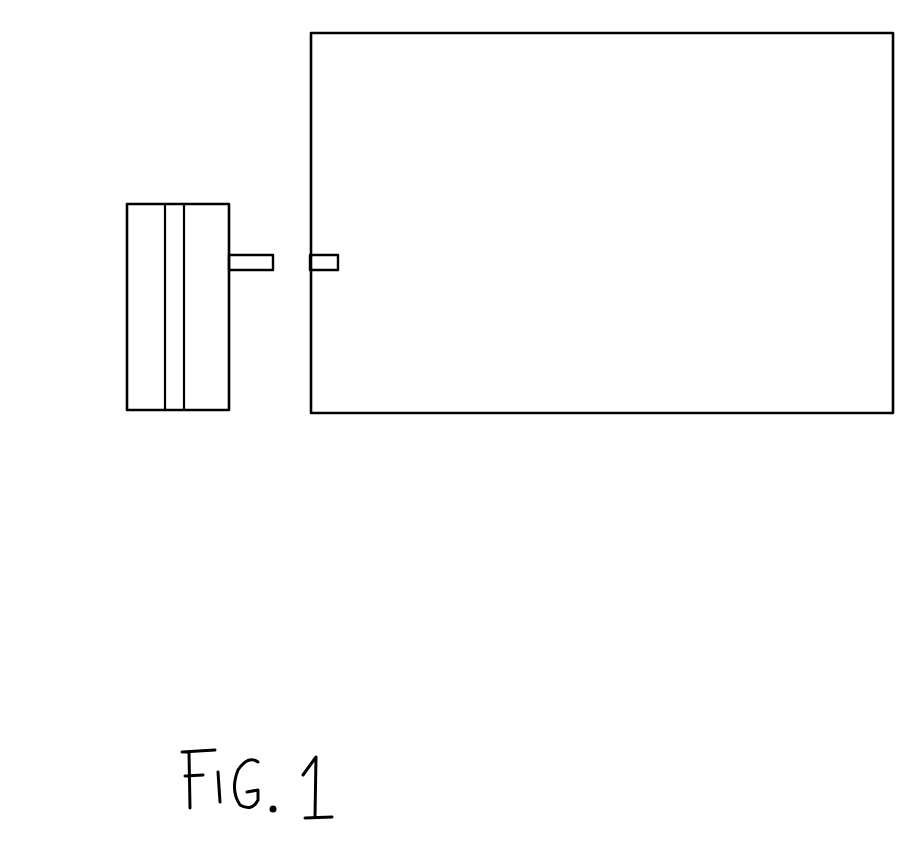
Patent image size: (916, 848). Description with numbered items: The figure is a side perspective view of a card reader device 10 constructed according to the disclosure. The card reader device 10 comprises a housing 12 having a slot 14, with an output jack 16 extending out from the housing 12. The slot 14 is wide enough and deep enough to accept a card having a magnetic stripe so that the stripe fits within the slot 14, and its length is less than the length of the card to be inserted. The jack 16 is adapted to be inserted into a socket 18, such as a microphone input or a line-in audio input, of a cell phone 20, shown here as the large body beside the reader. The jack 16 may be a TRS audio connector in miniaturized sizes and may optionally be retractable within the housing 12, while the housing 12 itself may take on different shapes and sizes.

The card reader device 10 is at (45, 585).
The housing 12 is at (137, 279).
The slot 14 is at (175, 238).
The output jack 16 is at (255, 263).
The socket 18 is at (327, 260).
The cell phone 20 is at (482, 413).